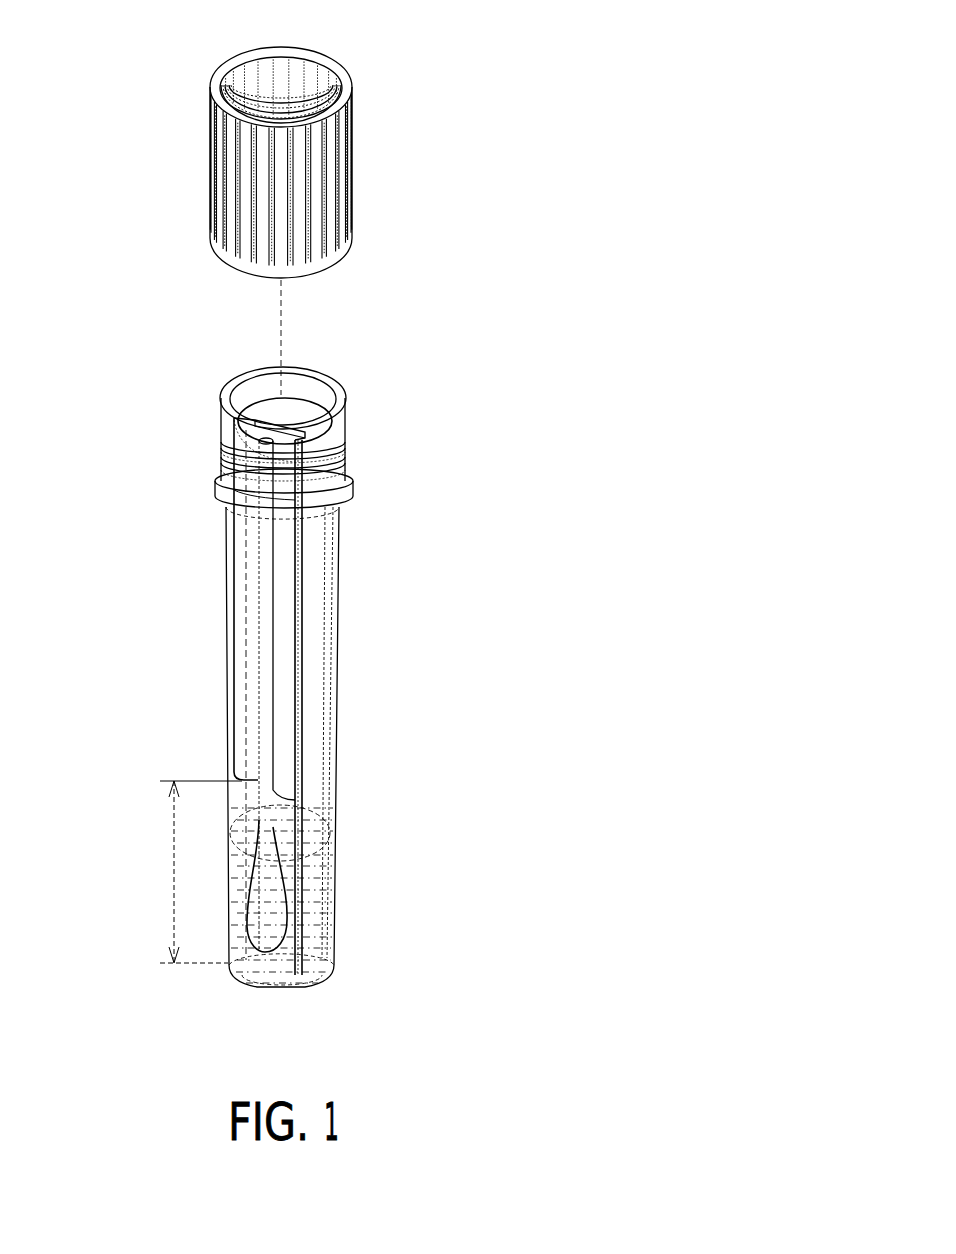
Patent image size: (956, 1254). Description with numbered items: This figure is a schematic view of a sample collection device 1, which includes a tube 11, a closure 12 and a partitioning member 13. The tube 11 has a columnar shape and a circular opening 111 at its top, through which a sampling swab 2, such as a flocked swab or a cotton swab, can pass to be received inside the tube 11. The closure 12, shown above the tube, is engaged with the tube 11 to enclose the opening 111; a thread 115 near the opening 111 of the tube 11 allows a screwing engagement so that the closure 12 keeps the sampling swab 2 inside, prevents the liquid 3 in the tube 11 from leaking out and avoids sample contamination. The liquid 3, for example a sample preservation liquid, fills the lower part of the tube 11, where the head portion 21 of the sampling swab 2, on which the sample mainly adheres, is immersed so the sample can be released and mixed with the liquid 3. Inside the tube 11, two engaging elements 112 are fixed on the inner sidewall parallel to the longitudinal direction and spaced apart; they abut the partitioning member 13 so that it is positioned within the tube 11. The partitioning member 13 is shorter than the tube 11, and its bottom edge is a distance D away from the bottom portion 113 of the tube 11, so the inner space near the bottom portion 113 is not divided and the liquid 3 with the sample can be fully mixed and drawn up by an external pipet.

The sample collection device 1 is at (594, 26).
The tube 11 is at (339, 672).
The opening 111 is at (300, 390).
The engaging element 112 is at (303, 718).
The bottom portion 113 is at (310, 987).
The thread 115 is at (347, 452).
The closure 12 is at (310, 76).
The partitioning member 13 is at (285, 677).
The sampling swab 2 is at (241, 727).
The head portion 21 is at (270, 900).
The liquid 3 is at (313, 897).
The distance D is at (197, 872).